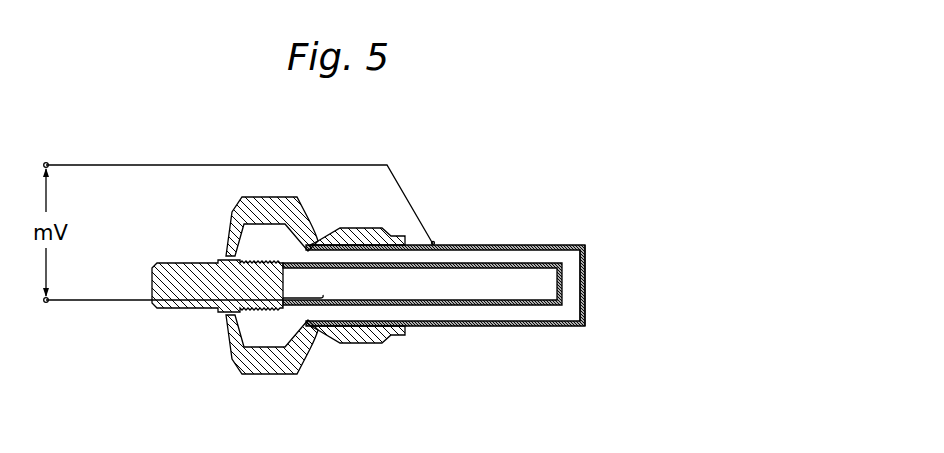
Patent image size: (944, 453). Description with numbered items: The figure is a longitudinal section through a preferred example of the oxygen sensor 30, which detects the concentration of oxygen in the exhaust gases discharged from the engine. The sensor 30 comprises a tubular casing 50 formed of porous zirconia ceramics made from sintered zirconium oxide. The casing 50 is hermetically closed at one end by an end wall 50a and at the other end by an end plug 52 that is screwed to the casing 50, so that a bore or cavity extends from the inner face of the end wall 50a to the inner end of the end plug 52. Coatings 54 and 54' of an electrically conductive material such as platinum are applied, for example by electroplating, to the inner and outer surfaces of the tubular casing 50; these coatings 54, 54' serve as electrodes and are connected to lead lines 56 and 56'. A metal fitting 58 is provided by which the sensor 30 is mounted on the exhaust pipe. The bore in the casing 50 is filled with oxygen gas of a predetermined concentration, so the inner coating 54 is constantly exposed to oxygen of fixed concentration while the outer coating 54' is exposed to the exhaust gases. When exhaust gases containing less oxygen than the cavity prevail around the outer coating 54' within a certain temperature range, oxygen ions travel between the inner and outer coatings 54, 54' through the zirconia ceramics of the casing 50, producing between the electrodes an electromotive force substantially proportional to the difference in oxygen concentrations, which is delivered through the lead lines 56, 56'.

The sensor 30 is at (403, 308).
The tubular casing 50 is at (505, 312).
The end wall 50a is at (573, 270).
The end plug 52 is at (187, 312).
The inner conductive coating 54 is at (422, 323).
The outer conductive coating 54' is at (424, 267).
The lead line 56 is at (99, 326).
The lead line 56' is at (240, 205).
The metal fitting 58 is at (310, 358).